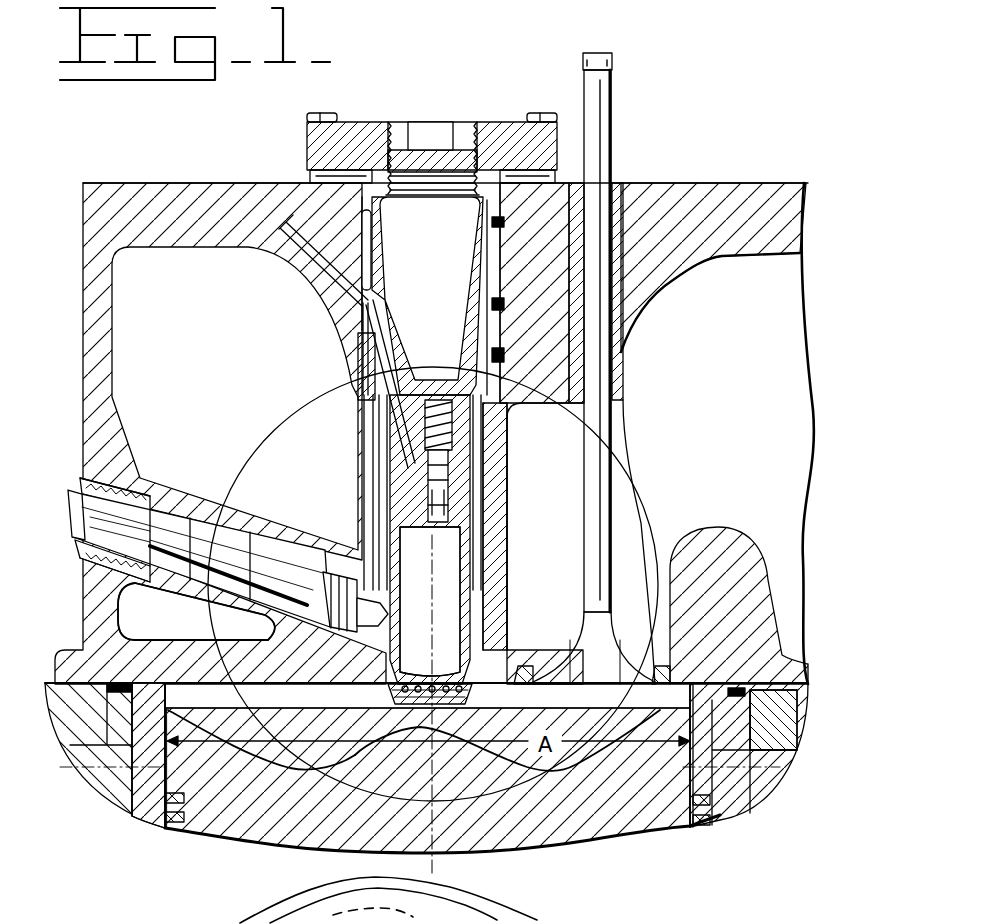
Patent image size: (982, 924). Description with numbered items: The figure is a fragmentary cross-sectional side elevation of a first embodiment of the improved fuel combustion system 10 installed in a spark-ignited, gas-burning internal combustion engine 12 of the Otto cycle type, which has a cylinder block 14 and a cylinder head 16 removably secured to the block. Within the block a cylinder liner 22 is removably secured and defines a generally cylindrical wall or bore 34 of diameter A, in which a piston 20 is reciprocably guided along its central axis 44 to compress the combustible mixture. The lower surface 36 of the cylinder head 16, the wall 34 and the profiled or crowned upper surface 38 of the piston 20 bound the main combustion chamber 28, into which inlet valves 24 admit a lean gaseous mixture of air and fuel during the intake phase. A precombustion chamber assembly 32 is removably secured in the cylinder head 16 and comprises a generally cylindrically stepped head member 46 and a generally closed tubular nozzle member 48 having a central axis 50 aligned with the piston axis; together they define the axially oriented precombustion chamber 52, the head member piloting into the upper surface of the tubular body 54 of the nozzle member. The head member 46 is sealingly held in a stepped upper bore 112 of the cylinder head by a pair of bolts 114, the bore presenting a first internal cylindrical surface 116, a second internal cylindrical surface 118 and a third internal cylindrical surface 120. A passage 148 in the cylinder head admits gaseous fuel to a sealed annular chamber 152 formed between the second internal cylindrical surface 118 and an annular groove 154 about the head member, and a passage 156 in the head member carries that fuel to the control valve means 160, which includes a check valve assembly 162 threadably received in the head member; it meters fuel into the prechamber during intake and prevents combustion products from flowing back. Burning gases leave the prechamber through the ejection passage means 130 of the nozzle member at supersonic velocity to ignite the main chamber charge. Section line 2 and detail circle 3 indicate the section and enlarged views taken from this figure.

The fuel combustion system 10 is at (660, 102).
The internal combustion engine 12 is at (157, 178).
The cylinder block 14 is at (110, 796).
The cylinder head 16 is at (735, 185).
The piston 20 is at (615, 822).
The cylinder liner 22 is at (742, 812).
The inlet valves 24 is at (615, 440).
The main combustion chamber 28 is at (690, 682).
The precombustion chamber assembly 32 is at (375, 468).
The bore 34 is at (722, 784).
The lower surface of the cylinder head 36 is at (205, 688).
The upper surface of the piston 38 is at (258, 760).
The central axis of the piston 44 is at (432, 845).
The head member 46 is at (305, 137).
The nozzle member 48 is at (482, 640).
The central axis of the nozzle member 50 is at (445, 552).
The precombustion chamber 52 is at (445, 570).
The tubular body 54 is at (395, 670).
The stepped upper bore 112 is at (495, 256).
The bolts 114 is at (552, 118).
The first internal cylindrical surface 116 is at (504, 222).
The second internal cylindrical surface 118 is at (504, 305).
The third internal cylindrical surface 120 is at (504, 356).
The ejection passage means 130 is at (398, 700).
The passage 148 is at (310, 252).
The sealed annular chamber 152 is at (340, 330).
The annular groove 154 is at (385, 303).
The passage 156 is at (392, 330).
The control valve means 160 is at (460, 445).
The check valve assembly 162 is at (452, 432).
The section line 2- 2 is at (860, 652).
The detail circle 3 is at (255, 765).